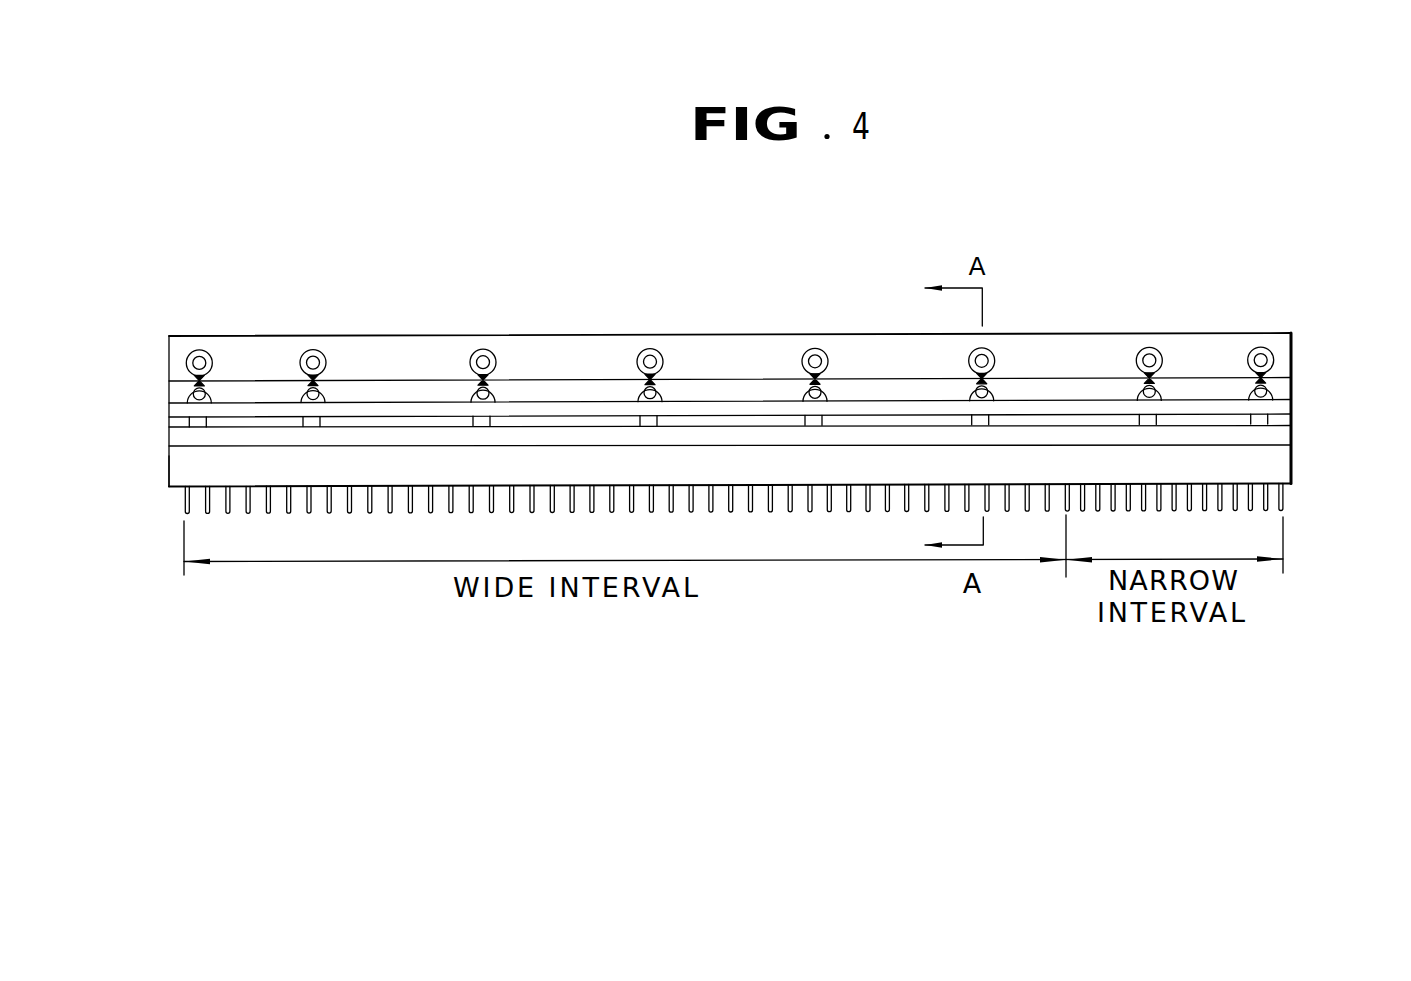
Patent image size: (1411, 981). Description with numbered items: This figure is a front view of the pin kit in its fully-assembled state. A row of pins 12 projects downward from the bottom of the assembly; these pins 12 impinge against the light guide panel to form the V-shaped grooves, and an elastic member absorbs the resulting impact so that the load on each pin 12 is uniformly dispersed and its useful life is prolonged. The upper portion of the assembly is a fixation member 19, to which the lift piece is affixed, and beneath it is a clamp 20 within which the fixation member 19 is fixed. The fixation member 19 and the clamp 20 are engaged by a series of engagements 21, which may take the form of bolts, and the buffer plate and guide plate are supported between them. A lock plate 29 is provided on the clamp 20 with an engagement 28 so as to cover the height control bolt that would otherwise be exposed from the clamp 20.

The pin 12 is at (248, 512).
The fixation member 19 is at (1280, 345).
The clamp 20 is at (177, 466).
The engagements 21 is at (1278, 388).
The engagement 28 is at (193, 420).
The lock plate 29 is at (178, 440).